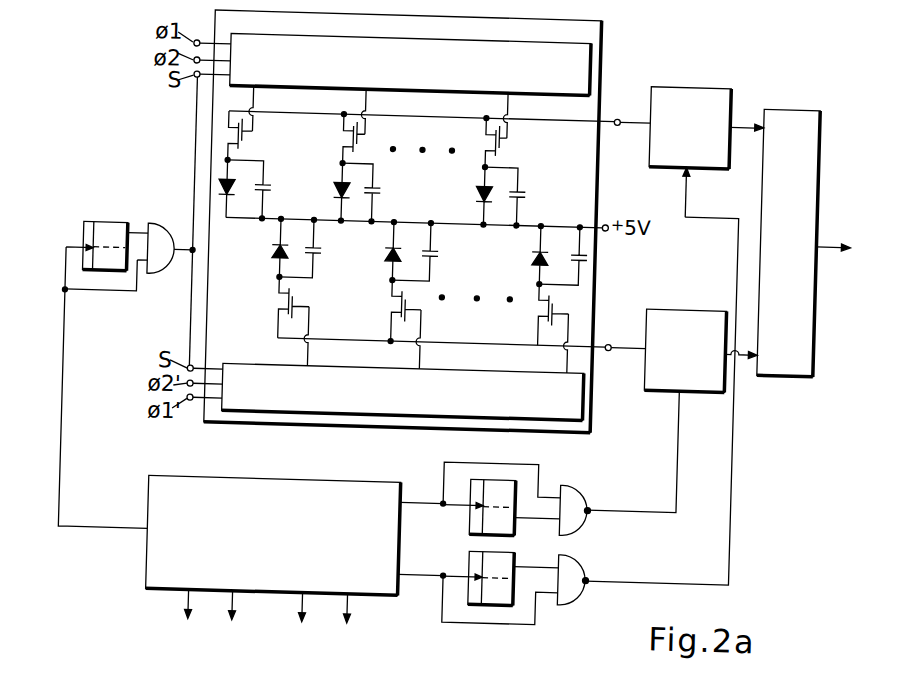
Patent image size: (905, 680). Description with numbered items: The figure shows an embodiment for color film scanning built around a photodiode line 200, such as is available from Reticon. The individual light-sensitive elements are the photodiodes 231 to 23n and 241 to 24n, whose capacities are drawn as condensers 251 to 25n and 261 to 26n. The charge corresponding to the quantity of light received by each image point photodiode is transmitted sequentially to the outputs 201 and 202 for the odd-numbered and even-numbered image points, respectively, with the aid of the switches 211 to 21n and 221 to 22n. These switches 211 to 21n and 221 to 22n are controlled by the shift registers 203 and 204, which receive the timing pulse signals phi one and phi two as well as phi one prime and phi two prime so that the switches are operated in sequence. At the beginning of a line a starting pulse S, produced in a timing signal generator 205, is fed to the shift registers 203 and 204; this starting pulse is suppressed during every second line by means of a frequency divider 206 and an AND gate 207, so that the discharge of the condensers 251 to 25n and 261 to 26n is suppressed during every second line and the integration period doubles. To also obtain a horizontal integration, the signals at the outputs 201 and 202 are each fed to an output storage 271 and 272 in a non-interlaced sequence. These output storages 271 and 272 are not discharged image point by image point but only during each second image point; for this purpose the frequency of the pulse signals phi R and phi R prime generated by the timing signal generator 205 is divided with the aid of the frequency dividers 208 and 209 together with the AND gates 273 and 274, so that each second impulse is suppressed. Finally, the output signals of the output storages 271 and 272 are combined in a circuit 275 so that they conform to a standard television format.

The photodiode line 200 is at (602, 16).
The output 201 is at (621, 97).
The output 202 is at (624, 321).
The shift register 203 is at (552, 70).
The shift register 204 is at (566, 394).
The timing signal generator 205 is at (286, 484).
The frequency divider 206 is at (100, 220).
The AND gate 207 is at (164, 228).
The frequency divider 208 is at (524, 468).
The frequency divider 209 is at (519, 584).
The switch 211 is at (503, 128).
The switch 221 is at (570, 282).
The photodiode 231 is at (482, 182).
The photodiode 241 is at (539, 240).
The condenser 251 is at (530, 180).
The condenser 261 is at (594, 246).
The output storage 271 is at (688, 72).
The output storage 272 is at (700, 290).
The AND gate 273 is at (594, 556).
The AND gate 274 is at (594, 484).
The circuit 275 is at (788, 95).
The switch 21n is at (246, 128).
The switch 22n is at (291, 294).
The photodiode 23n is at (226, 174).
The photodiode 24n is at (282, 242).
The condenser 25n is at (271, 180).
The condenser 26n is at (325, 243).